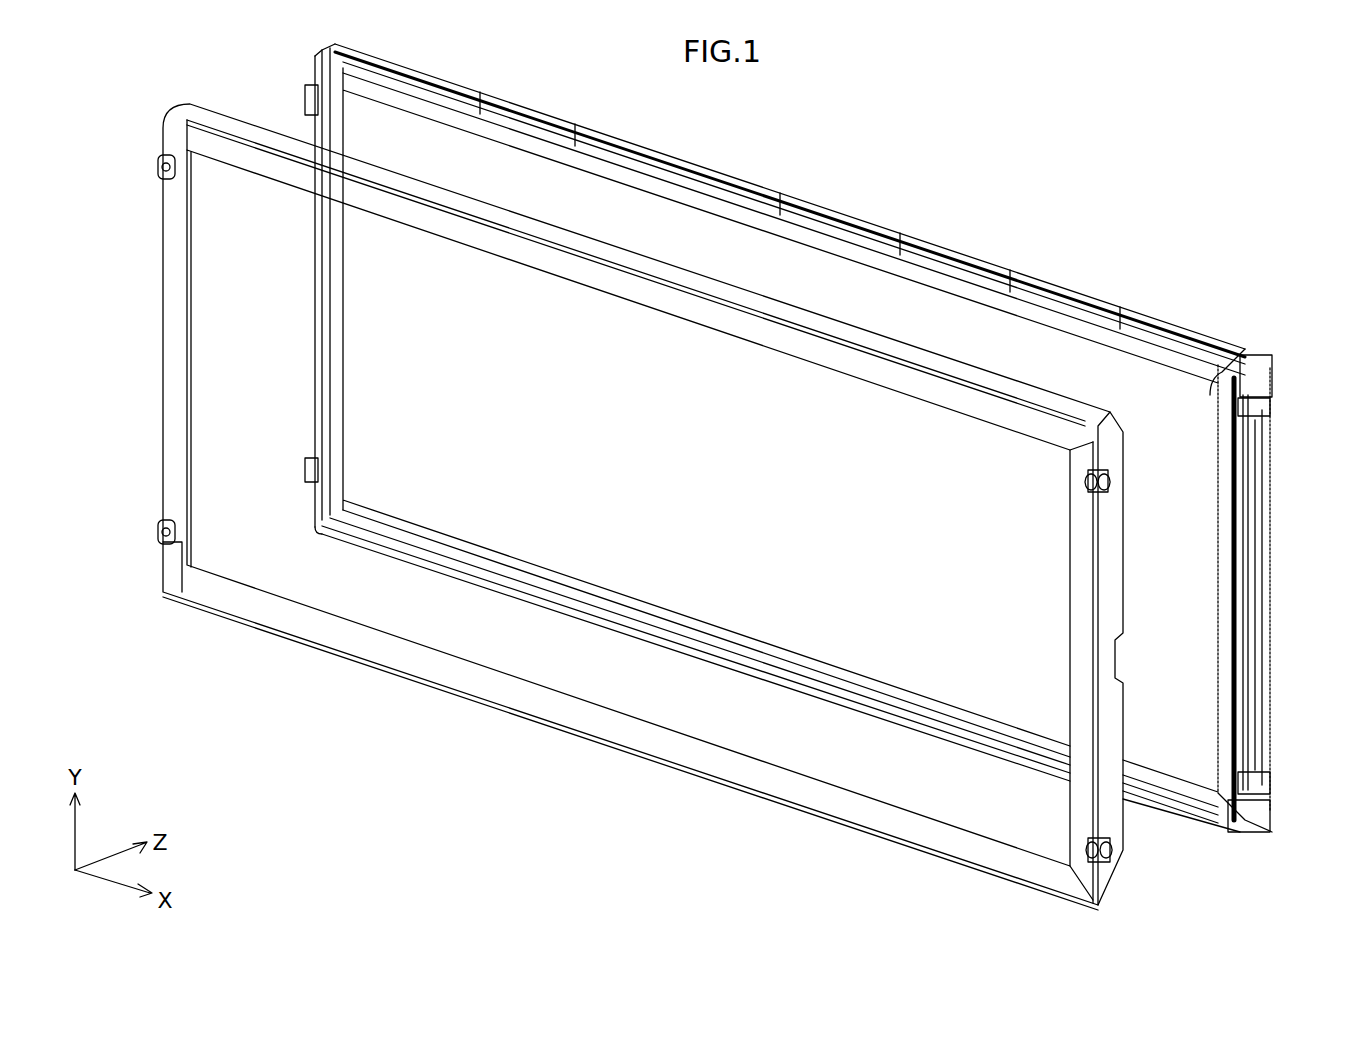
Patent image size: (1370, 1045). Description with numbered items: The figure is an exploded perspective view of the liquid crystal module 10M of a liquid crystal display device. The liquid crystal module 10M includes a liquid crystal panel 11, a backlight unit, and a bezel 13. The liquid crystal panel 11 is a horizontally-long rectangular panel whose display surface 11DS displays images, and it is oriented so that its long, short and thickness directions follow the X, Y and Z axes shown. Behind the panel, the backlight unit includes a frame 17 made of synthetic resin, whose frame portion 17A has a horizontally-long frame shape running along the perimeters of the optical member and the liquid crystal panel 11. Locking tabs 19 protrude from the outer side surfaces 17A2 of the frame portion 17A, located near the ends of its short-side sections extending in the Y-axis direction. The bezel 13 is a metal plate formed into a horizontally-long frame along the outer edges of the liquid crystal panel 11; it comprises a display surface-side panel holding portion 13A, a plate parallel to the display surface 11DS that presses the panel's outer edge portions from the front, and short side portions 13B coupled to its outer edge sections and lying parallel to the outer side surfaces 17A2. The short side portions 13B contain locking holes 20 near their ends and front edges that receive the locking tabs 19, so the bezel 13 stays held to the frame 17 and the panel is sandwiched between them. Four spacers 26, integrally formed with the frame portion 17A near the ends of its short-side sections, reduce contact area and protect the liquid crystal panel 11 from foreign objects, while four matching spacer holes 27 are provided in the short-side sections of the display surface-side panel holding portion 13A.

The liquid crystal module 10M is at (584, 803).
The liquid crystal panel 11 is at (838, 256).
The display surface 11DS is at (940, 465).
The bezel 13 is at (416, 690).
The display surface-side panel holding portion 13A is at (1085, 668).
The short side portions 13B is at (1115, 822).
The frame 17 is at (1270, 482).
The frame portion 17A is at (1270, 690).
The outer side surfaces 17A2 is at (1262, 524).
The locking tabs 19 is at (1268, 410).
The locking holes 20 is at (160, 165).
The spacers 26 is at (312, 100).
The spacer holes 27 is at (172, 165).